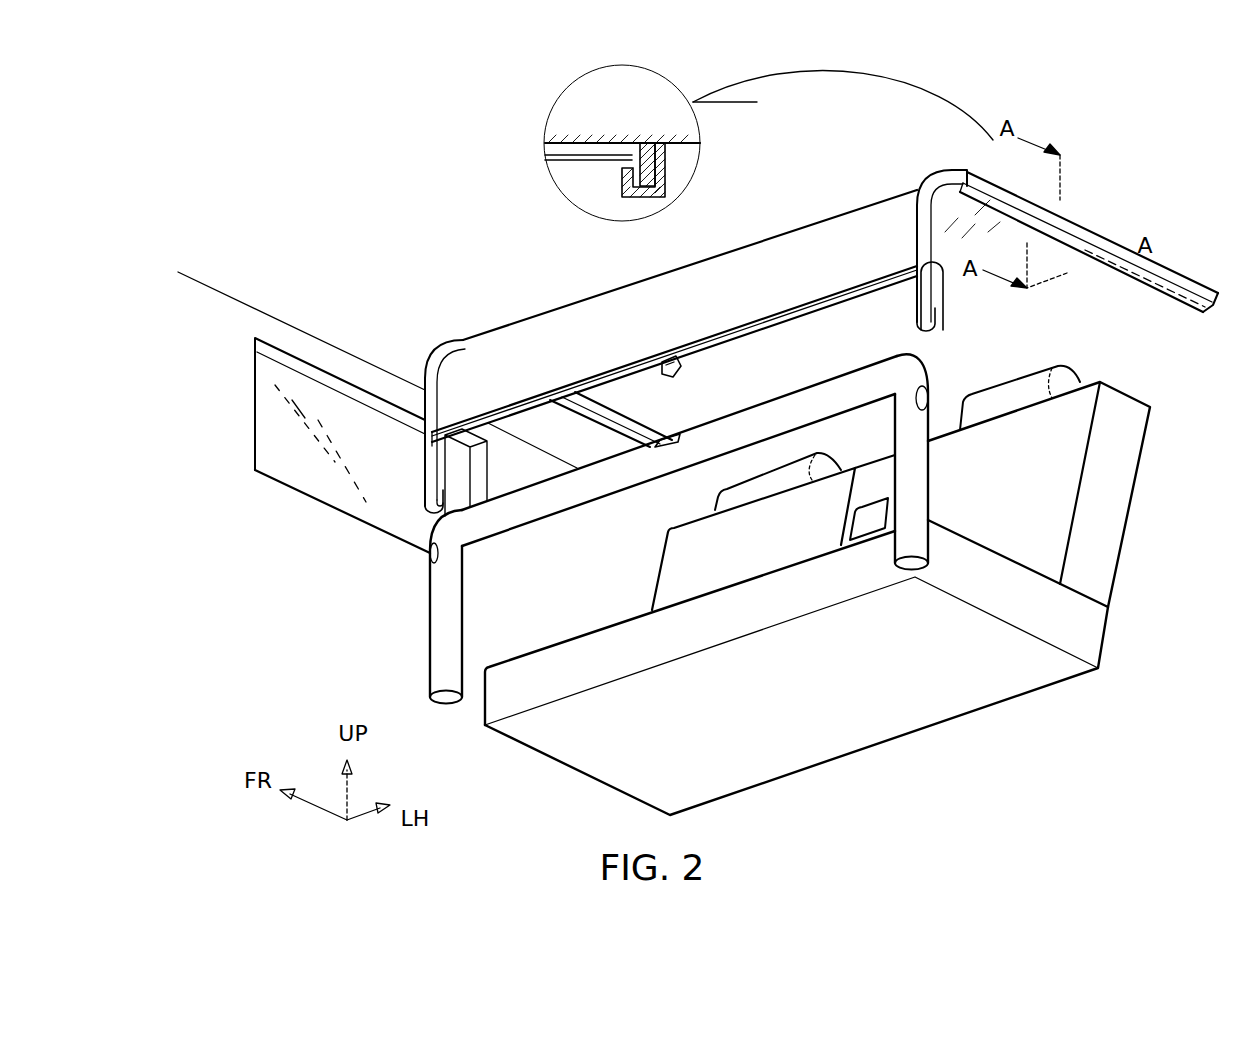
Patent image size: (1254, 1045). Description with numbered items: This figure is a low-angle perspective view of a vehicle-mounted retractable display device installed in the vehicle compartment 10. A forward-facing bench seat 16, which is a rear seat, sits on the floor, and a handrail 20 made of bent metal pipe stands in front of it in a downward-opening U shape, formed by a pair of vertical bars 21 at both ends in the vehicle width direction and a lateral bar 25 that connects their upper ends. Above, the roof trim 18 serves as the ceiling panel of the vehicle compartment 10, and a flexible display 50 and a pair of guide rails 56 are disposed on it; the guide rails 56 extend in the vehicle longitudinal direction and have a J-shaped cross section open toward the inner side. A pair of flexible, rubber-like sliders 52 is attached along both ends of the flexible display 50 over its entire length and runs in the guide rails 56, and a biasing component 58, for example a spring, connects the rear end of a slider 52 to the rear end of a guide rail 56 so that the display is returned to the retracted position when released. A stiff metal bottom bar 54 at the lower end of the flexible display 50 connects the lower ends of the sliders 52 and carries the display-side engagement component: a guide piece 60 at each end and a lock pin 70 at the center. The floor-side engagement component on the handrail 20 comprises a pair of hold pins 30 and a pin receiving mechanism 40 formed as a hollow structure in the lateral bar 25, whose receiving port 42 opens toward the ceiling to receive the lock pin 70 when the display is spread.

The vehicle compartment 10 is at (251, 185).
The bench seat 16 is at (1120, 482).
The roof trim 18 is at (252, 273).
The handrail 20 is at (686, 516).
The vertical bar 21 is at (447, 627).
The lateral bar 25 is at (568, 498).
The hold pin 30 is at (427, 590).
The pin receiving mechanism 40 is at (658, 452).
The receiving port 42 is at (672, 437).
The flexible display 50 is at (522, 342).
The slider 52 is at (437, 350).
The bottom bar 54 is at (748, 325).
The guide rail 56 is at (618, 425).
The biasing component 58 is at (1202, 283).
The guide piece 60 is at (408, 493).
The lock pin 70 is at (665, 358).